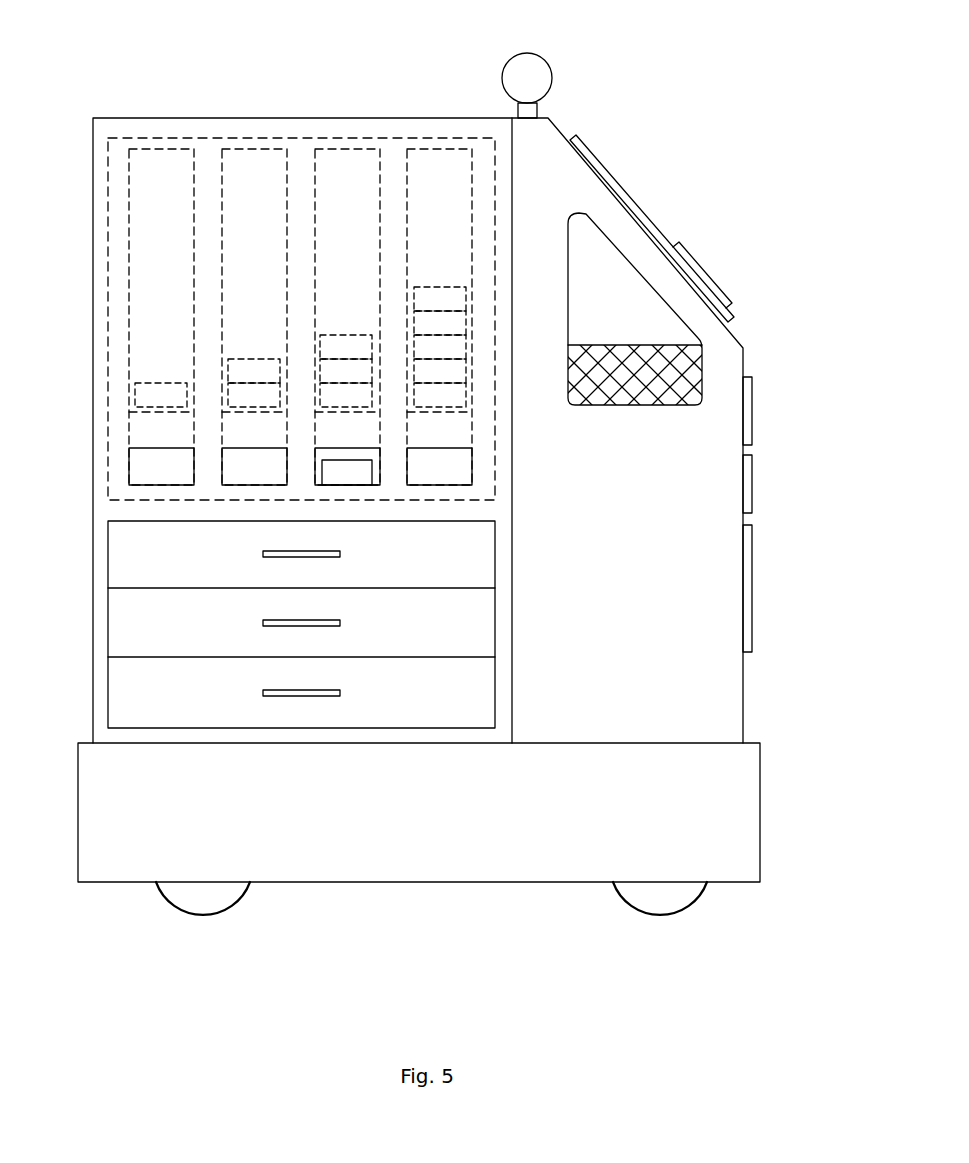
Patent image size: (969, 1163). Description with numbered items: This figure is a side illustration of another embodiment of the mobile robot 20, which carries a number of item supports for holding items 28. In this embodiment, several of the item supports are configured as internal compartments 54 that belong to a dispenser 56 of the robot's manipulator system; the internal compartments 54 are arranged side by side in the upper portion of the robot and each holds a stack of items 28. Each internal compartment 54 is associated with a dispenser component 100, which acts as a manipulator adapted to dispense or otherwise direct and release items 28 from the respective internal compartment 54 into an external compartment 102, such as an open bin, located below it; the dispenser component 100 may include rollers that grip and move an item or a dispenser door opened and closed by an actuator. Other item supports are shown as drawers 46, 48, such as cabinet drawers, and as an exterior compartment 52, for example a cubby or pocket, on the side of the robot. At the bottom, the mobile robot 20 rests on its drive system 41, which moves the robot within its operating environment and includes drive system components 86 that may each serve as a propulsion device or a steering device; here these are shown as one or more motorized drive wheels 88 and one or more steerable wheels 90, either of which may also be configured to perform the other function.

The mobile robot 20 is at (676, 86).
The items 28 is at (145, 398).
The drive system 41 is at (200, 942).
The drawer 46 is at (752, 410).
The drawer 48 is at (108, 562).
The exterior compartment 52 is at (587, 238).
The internal compartment 54 is at (158, 158).
The dispenser 56 is at (108, 158).
The drive system components 86 is at (390, 919).
The motorized drive wheels 88 is at (640, 908).
The steerable wheels 90 is at (175, 910).
The dispenser component 100 is at (144, 441).
The external compartment 102 is at (145, 462).